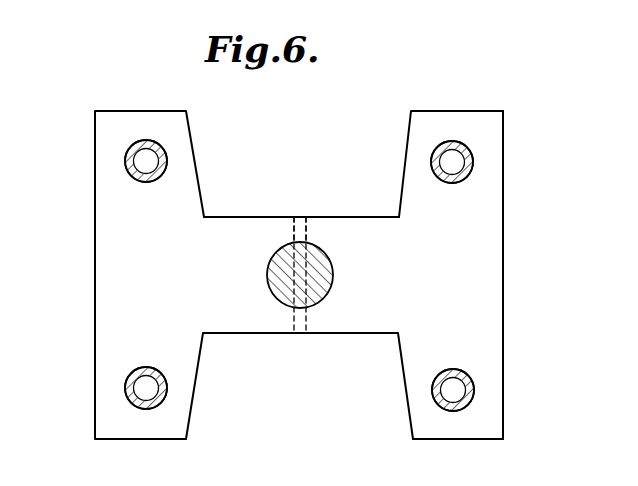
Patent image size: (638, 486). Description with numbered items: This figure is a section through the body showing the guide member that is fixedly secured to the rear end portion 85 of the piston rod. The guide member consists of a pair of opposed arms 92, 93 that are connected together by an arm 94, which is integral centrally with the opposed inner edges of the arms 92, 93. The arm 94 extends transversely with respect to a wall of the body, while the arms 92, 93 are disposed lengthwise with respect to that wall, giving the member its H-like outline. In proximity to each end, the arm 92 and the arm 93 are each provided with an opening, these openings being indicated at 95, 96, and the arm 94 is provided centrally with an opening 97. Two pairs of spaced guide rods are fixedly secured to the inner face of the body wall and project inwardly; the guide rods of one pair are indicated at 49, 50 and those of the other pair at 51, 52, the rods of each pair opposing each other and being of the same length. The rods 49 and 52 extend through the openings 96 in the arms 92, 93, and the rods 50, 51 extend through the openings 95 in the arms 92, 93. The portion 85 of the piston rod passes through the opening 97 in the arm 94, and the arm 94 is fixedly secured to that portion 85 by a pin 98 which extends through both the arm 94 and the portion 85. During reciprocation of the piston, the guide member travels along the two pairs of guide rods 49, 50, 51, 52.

The guide rod 49 is at (125, 160).
The guide rod 50 is at (128, 393).
The guide rod 51 is at (471, 168).
The guide rod 52 is at (473, 392).
The rear end portion of piston rod 85 is at (330, 280).
The arm 92 is at (105, 270).
The arm 93 is at (502, 263).
The arm 94 is at (353, 231).
The opening 95 is at (148, 141).
The opening 96 is at (143, 408).
The opening 97 is at (305, 243).
The pin 98 is at (292, 232).